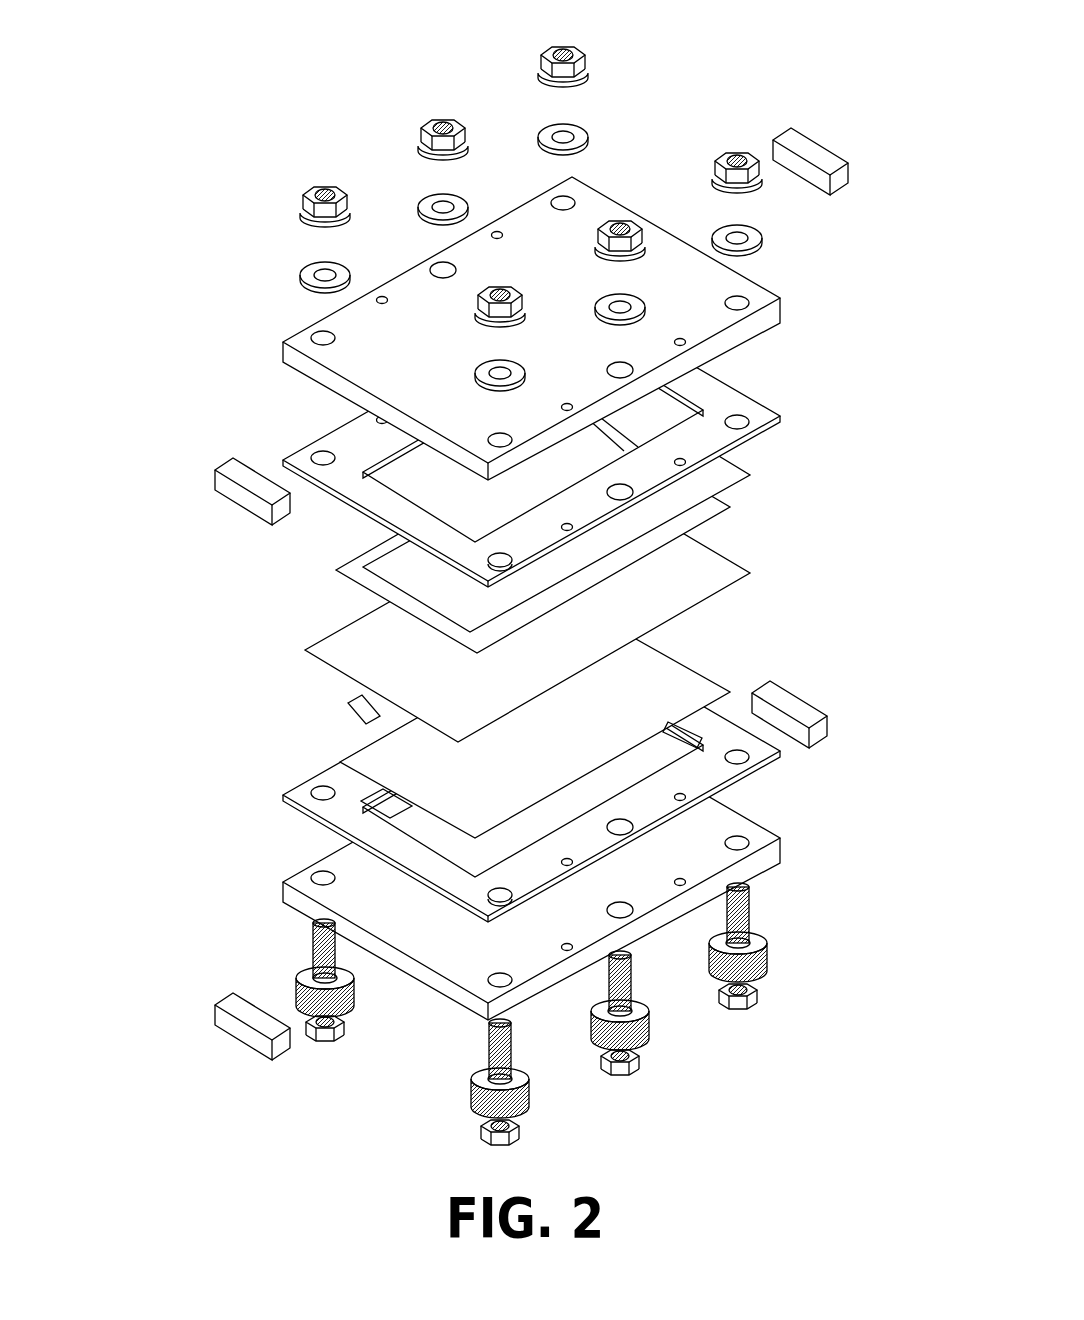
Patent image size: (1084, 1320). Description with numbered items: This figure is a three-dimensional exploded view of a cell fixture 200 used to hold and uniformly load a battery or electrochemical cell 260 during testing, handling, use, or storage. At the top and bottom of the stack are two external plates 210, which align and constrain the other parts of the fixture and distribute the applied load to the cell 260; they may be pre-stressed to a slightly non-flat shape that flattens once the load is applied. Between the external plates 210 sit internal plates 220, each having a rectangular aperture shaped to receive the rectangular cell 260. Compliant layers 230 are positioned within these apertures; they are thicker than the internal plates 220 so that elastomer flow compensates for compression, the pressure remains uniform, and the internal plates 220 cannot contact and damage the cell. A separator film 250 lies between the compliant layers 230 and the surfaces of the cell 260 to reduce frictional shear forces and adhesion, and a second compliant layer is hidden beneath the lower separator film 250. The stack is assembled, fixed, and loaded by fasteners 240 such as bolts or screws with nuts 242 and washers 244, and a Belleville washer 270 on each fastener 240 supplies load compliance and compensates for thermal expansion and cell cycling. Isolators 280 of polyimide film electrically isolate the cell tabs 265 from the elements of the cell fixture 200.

The cell fixture 200 is at (197, 325).
The external plates 210 is at (768, 309).
The internal plates 220 is at (770, 416).
The compliant layers 230 is at (363, 568).
The fasteners 240 is at (757, 988).
The nuts 242 is at (553, 52).
The washers 244 is at (553, 122).
The separator film 250 is at (724, 505).
The cell 260 is at (305, 650).
The cell tabs 265 is at (358, 705).
The Belleville washers 270 is at (757, 952).
The isolators 280 is at (835, 167).